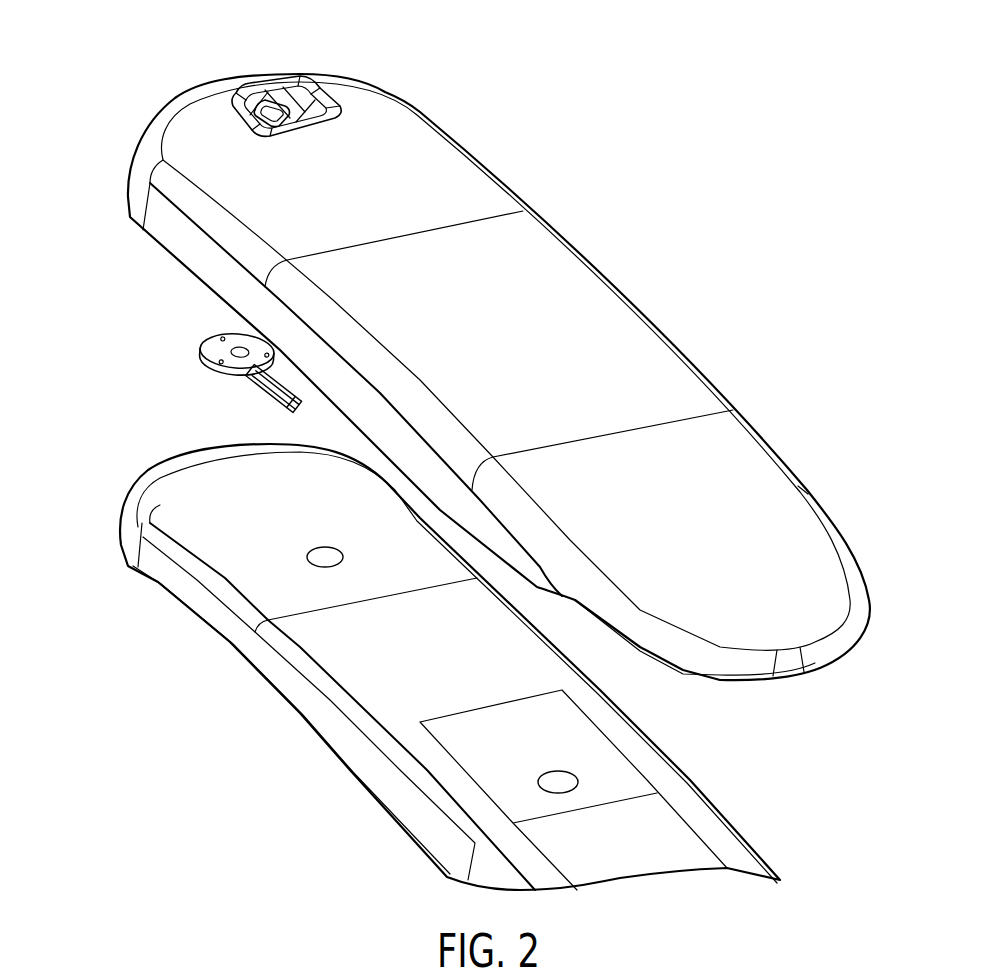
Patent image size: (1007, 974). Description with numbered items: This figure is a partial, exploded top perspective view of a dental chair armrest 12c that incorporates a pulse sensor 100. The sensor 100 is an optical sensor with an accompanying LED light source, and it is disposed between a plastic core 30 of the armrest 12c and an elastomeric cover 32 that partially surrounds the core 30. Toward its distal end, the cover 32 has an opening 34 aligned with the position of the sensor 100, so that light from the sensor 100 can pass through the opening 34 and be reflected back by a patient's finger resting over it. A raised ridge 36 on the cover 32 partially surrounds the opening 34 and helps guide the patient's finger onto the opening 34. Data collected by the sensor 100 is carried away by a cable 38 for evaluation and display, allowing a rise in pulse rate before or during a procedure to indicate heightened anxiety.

The armrest 12c is at (578, 138).
The plastic core 30 is at (155, 528).
The elastomeric cover 32 is at (820, 577).
The opening 34 is at (263, 103).
The raised ridge 36 is at (303, 90).
The cable 38 is at (250, 394).
The sensor 100 is at (207, 347).